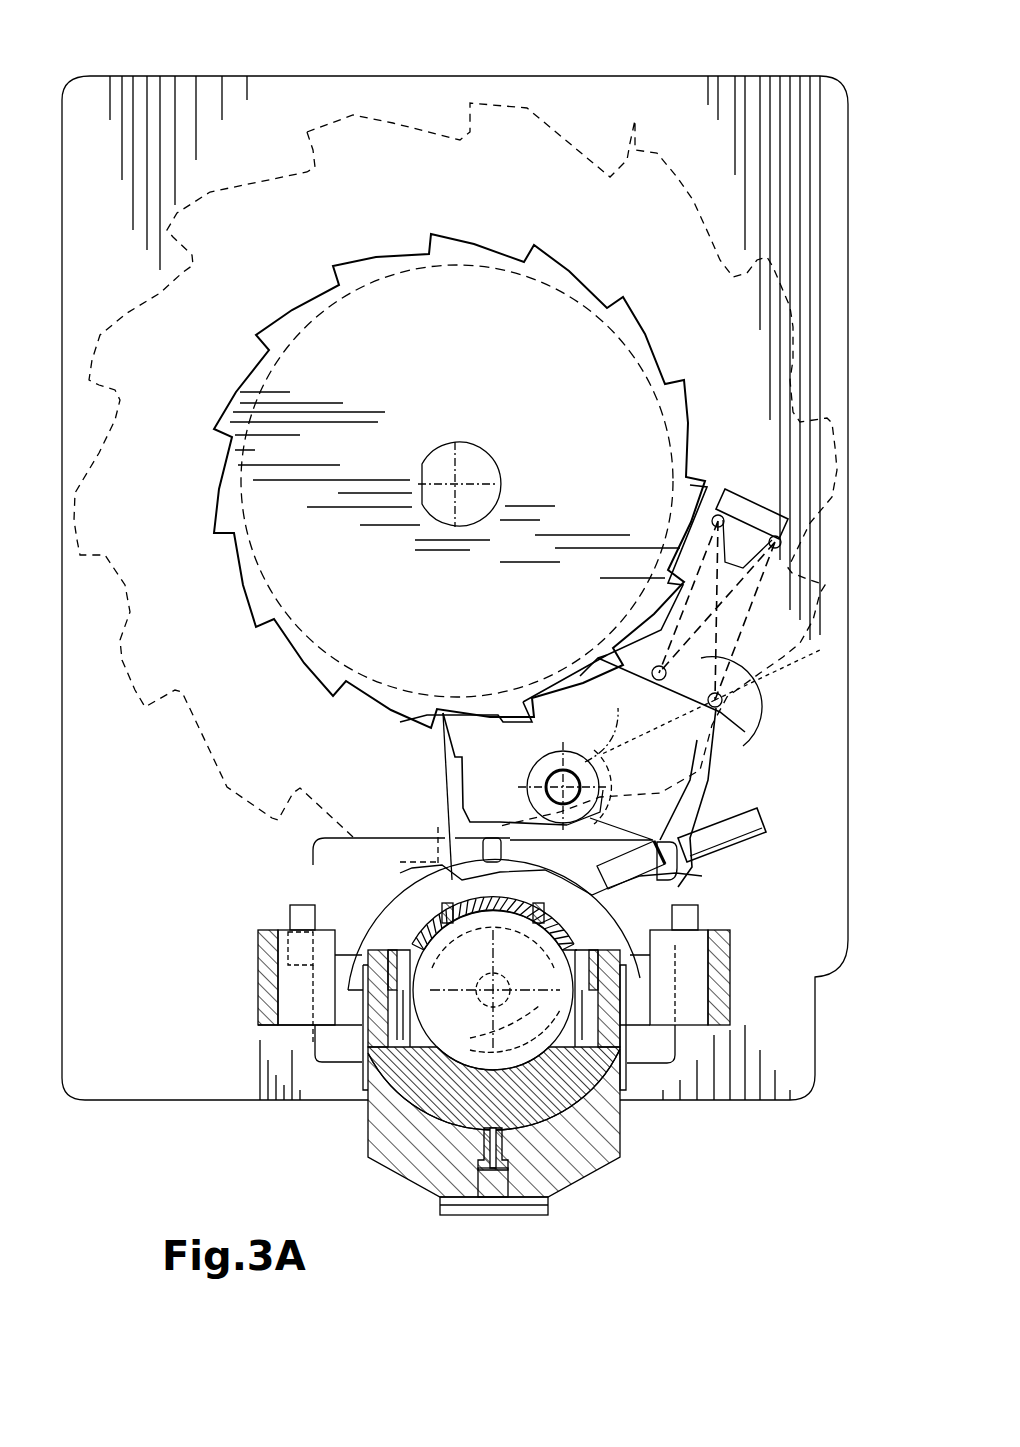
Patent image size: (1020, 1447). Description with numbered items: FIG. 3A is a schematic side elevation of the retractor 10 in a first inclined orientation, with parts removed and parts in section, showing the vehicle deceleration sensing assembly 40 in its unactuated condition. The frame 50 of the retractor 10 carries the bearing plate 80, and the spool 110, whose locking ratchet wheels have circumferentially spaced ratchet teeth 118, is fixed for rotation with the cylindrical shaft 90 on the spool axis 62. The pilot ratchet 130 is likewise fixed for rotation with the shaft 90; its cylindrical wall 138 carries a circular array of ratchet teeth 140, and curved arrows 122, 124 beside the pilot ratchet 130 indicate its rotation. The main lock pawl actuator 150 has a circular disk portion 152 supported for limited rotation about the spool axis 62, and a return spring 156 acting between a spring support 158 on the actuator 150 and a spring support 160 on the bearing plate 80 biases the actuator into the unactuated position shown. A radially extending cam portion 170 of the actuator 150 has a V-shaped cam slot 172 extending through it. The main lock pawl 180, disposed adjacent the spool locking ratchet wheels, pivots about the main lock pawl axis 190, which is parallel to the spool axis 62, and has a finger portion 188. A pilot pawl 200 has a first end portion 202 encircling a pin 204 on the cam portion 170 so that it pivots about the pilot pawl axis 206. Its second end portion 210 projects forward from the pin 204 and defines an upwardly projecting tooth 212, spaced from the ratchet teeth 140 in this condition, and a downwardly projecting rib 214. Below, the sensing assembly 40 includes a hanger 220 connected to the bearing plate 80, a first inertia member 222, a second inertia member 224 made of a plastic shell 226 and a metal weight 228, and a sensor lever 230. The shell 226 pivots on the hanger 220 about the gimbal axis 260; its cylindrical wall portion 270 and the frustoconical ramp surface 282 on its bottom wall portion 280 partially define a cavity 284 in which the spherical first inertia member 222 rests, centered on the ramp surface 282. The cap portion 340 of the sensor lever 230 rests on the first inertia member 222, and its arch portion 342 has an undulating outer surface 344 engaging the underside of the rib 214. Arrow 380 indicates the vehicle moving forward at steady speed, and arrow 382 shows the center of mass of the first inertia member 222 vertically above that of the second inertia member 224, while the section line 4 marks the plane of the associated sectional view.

The retractor 10 is at (248, 70).
The bearing plate 80 is at (400, 72).
The frame 50 is at (540, 72).
The spool 110 is at (560, 112).
The ratchet teeth 118 is at (300, 150).
The pilot ratchet 130 is at (592, 288).
The cylindrical wall 138 is at (505, 258).
The ratchet teeth 140 is at (335, 265).
The circular disk portion 152 is at (245, 580).
The blade rotation direction 122 is at (268, 500).
The blade rotation direction 124 is at (340, 638).
The spool axis 62 is at (460, 478).
The cylindrical shaft 90 is at (500, 468).
The return spring 156 is at (700, 565).
The spring support 160 is at (742, 498).
The spring support 158 is at (710, 702).
The pin 204 is at (575, 765).
The pilot pawl axis 206 is at (611, 720).
The pilot pawl 200 is at (600, 770).
The first end portion 202 is at (631, 787).
The section line 4- 4 is at (493, 760).
The tooth 212 is at (442, 735).
The second end portion 210 is at (458, 830).
The rib 214 is at (483, 850).
The undulating outer surface 344 is at (355, 835).
The cam portion 170 is at (700, 738).
The main lock pawl actuator 150 is at (745, 740).
The V-shaped cam slot 172 is at (678, 803).
The main lock pawl 180 is at (770, 810).
The finger portion 188 is at (665, 876).
The main lock pawl axis 190 is at (770, 832).
The arch portion 342 is at (630, 930).
The cap portion 340 is at (445, 885).
The sensor lever 230 is at (432, 912).
The first inertia member 222 is at (493, 990).
The ramp surface 282 is at (470, 1060).
The cylindrical wall portion 270 is at (368, 1028).
The cavity 284 is at (598, 1030).
The bottom wall portion 280 is at (430, 1100).
The gimbal axis 260 is at (605, 1112).
The second inertia member 224 is at (620, 1158).
The plastic shell 226 is at (445, 1130).
The metal weight 228 is at (565, 1190).
The vehicle deceleration sensing assembly 40 is at (478, 1218).
The hanger 220 is at (265, 930).
The vertically extending arrow 382 is at (135, 965).
The arrow 380 is at (200, 1078).